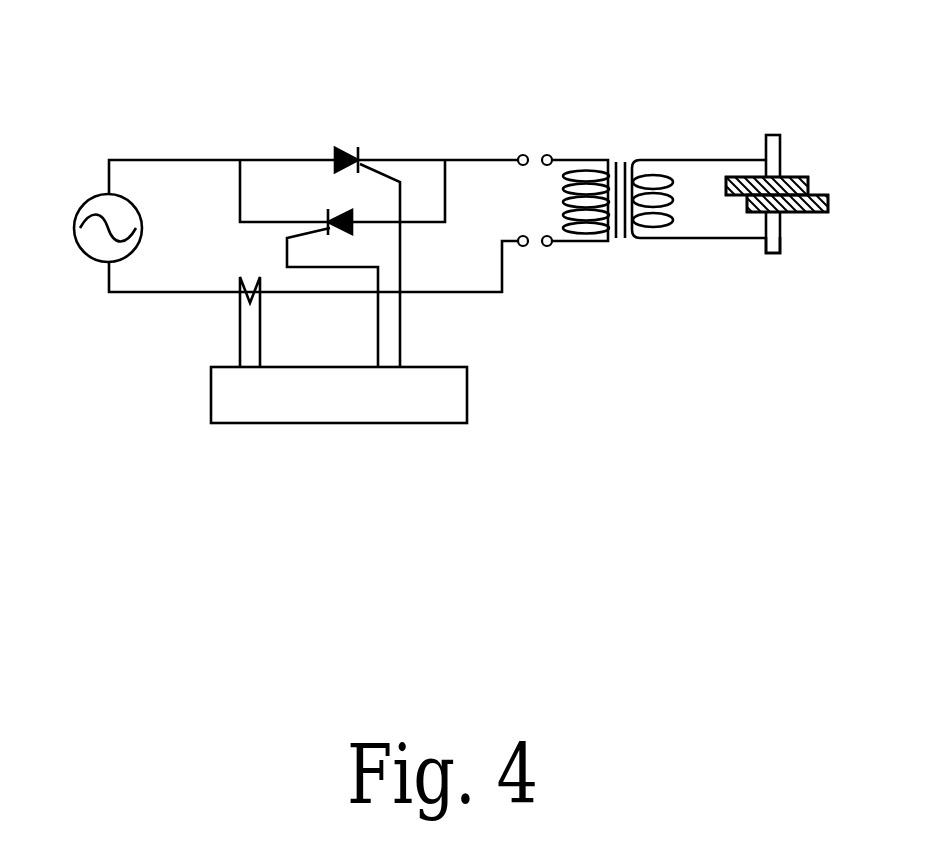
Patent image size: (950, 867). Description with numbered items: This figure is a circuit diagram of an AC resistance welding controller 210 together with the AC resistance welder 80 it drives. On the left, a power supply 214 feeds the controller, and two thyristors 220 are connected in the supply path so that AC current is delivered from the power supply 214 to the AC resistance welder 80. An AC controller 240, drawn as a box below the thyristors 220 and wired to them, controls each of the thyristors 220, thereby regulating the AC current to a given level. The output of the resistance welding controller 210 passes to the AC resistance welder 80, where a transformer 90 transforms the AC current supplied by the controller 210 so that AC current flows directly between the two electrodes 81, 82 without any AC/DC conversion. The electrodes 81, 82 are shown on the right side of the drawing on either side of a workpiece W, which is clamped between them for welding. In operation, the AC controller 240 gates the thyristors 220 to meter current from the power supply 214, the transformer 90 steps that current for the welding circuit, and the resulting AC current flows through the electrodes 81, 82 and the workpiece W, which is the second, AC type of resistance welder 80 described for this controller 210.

The AC resistance welding controller 210 is at (306, 192).
The thyristors 220 is at (302, 173).
The power supply 214 is at (94, 259).
The AC controller 240 is at (360, 423).
The AC resistance welder 80 is at (547, 98).
The transformer 90 is at (625, 120).
The electrode 81 is at (770, 143).
The electrode 82 is at (770, 252).
The workpiece W is at (810, 196).